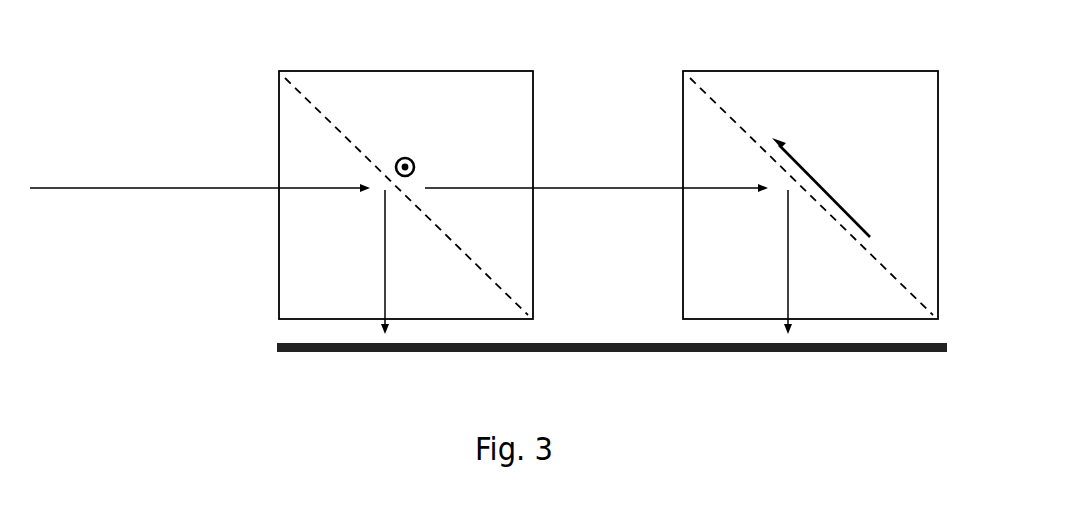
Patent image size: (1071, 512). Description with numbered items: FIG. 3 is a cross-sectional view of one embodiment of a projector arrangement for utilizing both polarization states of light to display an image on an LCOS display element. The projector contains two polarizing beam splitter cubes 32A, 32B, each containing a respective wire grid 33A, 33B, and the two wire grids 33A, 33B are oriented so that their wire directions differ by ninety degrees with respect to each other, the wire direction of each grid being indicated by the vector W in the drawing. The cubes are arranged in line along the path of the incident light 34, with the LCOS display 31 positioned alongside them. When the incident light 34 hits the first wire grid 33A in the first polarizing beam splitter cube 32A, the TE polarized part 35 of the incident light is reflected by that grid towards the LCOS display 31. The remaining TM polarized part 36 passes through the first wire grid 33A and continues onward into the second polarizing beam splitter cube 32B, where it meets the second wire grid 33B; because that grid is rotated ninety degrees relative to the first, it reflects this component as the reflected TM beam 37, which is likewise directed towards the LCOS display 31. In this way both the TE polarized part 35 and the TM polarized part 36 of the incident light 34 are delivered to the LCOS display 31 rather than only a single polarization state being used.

The LCOS display 31 is at (560, 352).
The polarizing beam splitter cube 32A is at (408, 71).
The polarizing beam splitter cube 32B is at (828, 71).
The wire grid 33A is at (333, 115).
The wire grid 33B is at (740, 115).
The incident light 34 is at (152, 188).
The TE polarized part 35 is at (382, 235).
The TM polarized part 36 is at (650, 188).
The reflected TM beam 37 is at (787, 218).